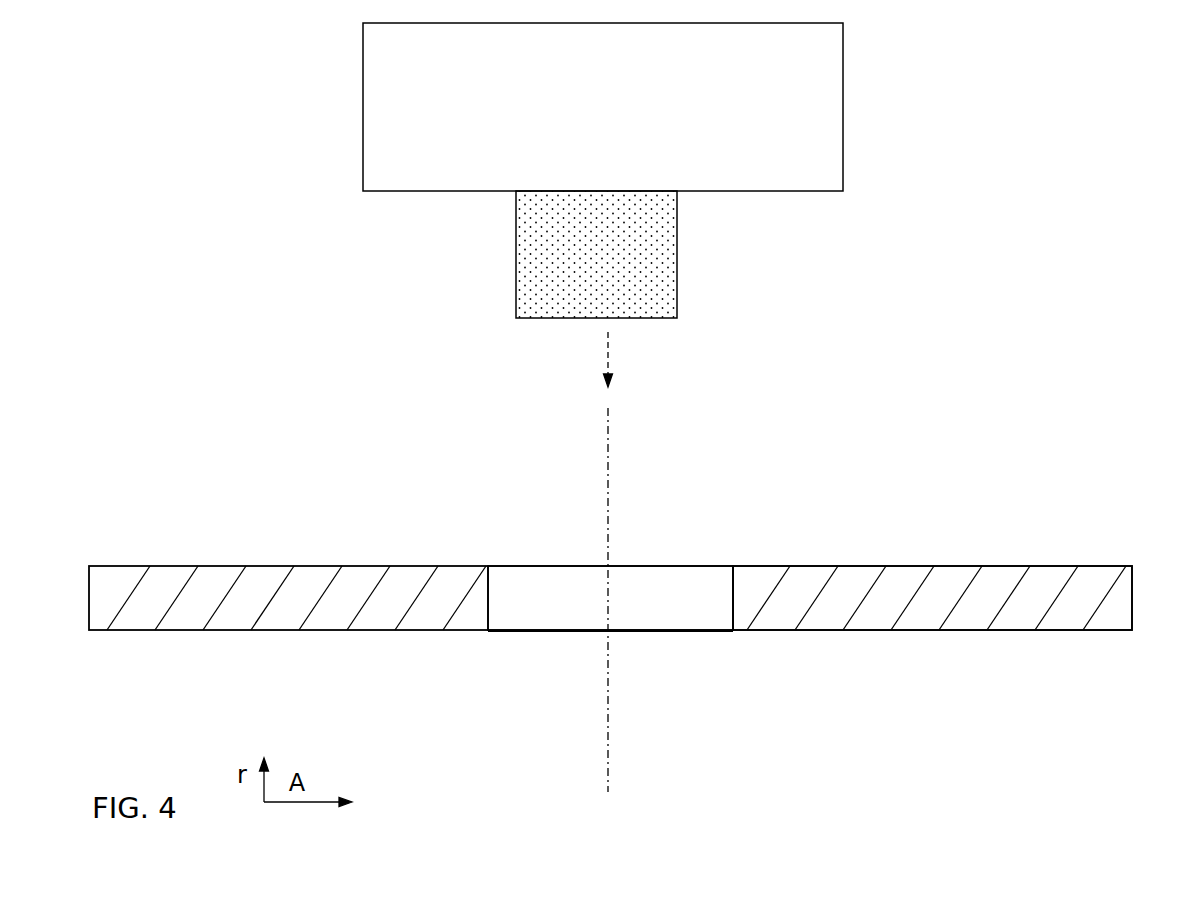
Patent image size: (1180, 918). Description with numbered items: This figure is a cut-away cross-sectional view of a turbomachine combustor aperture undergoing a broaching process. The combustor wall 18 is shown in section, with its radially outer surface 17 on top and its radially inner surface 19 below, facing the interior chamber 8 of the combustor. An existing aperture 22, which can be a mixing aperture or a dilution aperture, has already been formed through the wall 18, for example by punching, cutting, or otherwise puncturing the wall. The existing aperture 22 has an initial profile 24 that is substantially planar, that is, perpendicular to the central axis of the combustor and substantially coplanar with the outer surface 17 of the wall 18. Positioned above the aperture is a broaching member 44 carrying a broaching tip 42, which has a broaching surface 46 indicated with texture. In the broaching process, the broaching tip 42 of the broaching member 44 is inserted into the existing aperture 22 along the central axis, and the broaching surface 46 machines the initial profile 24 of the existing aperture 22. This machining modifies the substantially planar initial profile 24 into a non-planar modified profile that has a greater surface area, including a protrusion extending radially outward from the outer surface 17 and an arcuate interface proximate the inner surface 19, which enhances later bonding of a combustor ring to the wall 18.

The broaching member 44 is at (603, 107).
The broaching tip 42 is at (472, 250).
The broaching surface 46 is at (652, 285).
The existing aperture 22 is at (735, 477).
The outer surface 17 is at (331, 529).
The wall 18 is at (1118, 616).
The inner surface 19 is at (274, 659).
The initial profile 24 is at (512, 629).
The interior chamber 8 is at (673, 562).